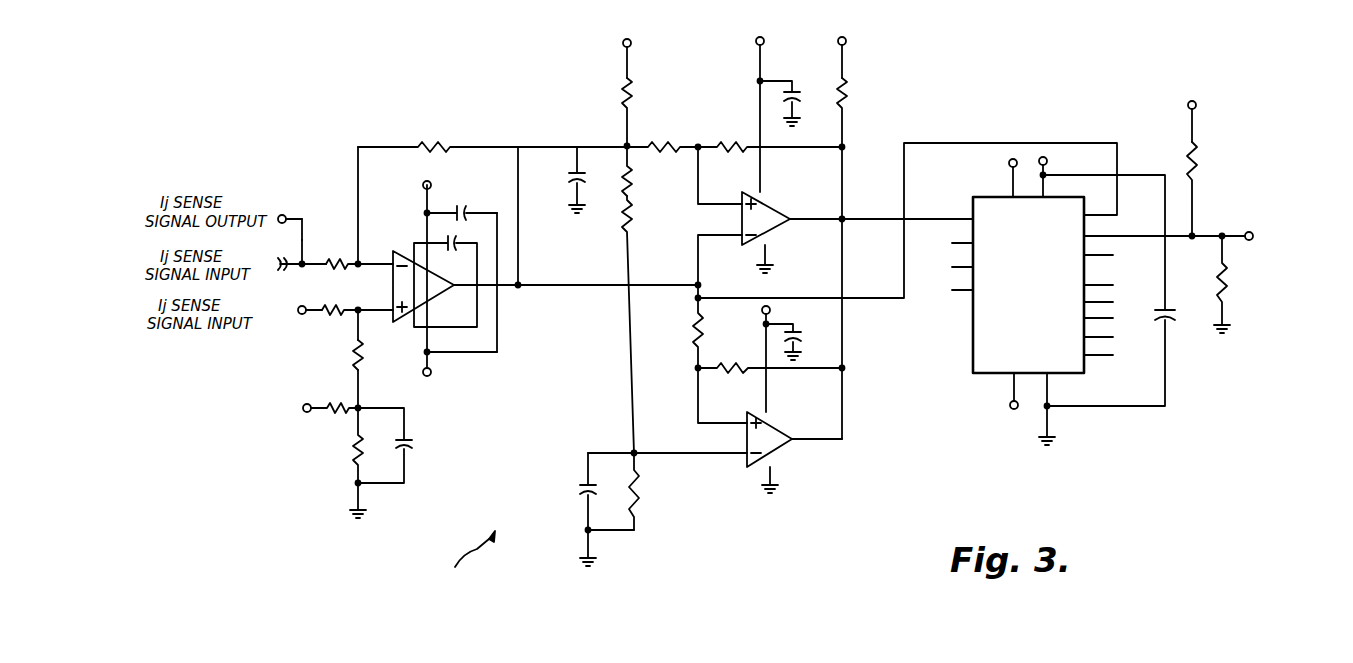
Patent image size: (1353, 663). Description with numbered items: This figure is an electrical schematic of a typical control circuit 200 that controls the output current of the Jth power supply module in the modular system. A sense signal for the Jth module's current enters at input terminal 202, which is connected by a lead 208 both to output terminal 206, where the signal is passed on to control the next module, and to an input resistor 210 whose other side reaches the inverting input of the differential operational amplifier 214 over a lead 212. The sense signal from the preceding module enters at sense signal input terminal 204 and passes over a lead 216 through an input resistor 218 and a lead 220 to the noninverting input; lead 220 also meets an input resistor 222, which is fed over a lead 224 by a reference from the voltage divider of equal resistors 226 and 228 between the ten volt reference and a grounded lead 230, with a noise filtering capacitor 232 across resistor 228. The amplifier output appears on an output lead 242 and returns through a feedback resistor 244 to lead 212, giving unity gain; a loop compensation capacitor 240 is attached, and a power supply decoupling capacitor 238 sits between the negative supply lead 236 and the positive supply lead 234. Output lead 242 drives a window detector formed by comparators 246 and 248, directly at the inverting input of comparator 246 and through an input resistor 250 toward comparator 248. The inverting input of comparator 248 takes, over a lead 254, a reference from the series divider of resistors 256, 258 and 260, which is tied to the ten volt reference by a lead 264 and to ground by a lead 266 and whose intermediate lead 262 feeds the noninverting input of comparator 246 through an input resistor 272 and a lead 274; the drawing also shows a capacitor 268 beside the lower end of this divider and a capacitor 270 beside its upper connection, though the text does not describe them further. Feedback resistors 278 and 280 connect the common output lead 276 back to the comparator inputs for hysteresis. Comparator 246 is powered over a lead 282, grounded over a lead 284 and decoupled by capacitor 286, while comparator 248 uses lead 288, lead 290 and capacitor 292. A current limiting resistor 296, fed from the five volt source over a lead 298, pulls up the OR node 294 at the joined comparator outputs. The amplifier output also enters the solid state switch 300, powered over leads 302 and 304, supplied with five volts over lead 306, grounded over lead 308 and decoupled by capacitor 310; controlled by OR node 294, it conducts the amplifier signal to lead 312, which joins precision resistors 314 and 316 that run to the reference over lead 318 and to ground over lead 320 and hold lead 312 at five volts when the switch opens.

The control circuit 200 is at (447, 557).
The input terminal 202 is at (296, 242).
The sense signal input terminal 204 is at (300, 316).
The output terminal 206 is at (290, 217).
The lead 208 is at (300, 235).
The input resistor 210 is at (331, 258).
The lead 212 is at (358, 260).
The differential operational amplifier 214 is at (387, 280).
The lead 216 is at (304, 312).
The input resistor 218 is at (330, 269).
The lead 220 is at (355, 328).
The input resistor 222 is at (355, 360).
The lead 224 is at (362, 390).
The voltage divider resistor 226 is at (340, 414).
The voltage divider resistor 228 is at (350, 454).
The grounded lead 230 is at (355, 495).
The noise filtering capacitor 232 is at (412, 444).
The lead 234 is at (427, 351).
The lead 236 is at (437, 210).
The power supply decoupling capacitor 238 is at (477, 202).
The loop compensation capacitor 240 is at (448, 281).
The output lead 242 is at (511, 286).
The feedback resistor 244 is at (440, 142).
The comparator 246 is at (775, 208).
The comparator 248 is at (788, 450).
The input resistor 250 is at (697, 340).
The lead 254 is at (676, 453).
The resistor 256 is at (644, 497).
The resistor 258 is at (637, 219).
The resistor 260 is at (635, 91).
The lead 262 is at (634, 173).
The lead 264 is at (632, 62).
The lead 266 is at (618, 532).
The capacitor 268 is at (580, 481).
The capacitor 270 is at (574, 172).
The input resistor 272 is at (663, 144).
The lead 274 is at (700, 174).
The lead 276 is at (811, 222).
The feedback resistor 278 is at (732, 144).
The feedback resistor 280 is at (734, 367).
The lead 282 is at (757, 83).
The lead 284 is at (762, 257).
The decoupling capacitor 286 is at (793, 88).
The lead 288 is at (773, 410).
The lead 290 is at (780, 488).
The decoupling capacitor 292 is at (801, 340).
The OR node 294 is at (850, 214).
The current limiting resistor 296 is at (847, 92).
The lead 298 is at (854, 54).
The solid state switch 300 is at (973, 342).
The lead 302 is at (1012, 183).
The lead 304 is at (1014, 388).
The lead 306 is at (1133, 174).
The lead 308 is at (1118, 408).
The decoupling capacitor 310 is at (1171, 310).
The lead 312 is at (1138, 237).
The resistor 314 is at (1200, 161).
The resistor 316 is at (1228, 290).
The lead 318 is at (1200, 128).
The lead 320 is at (1234, 325).